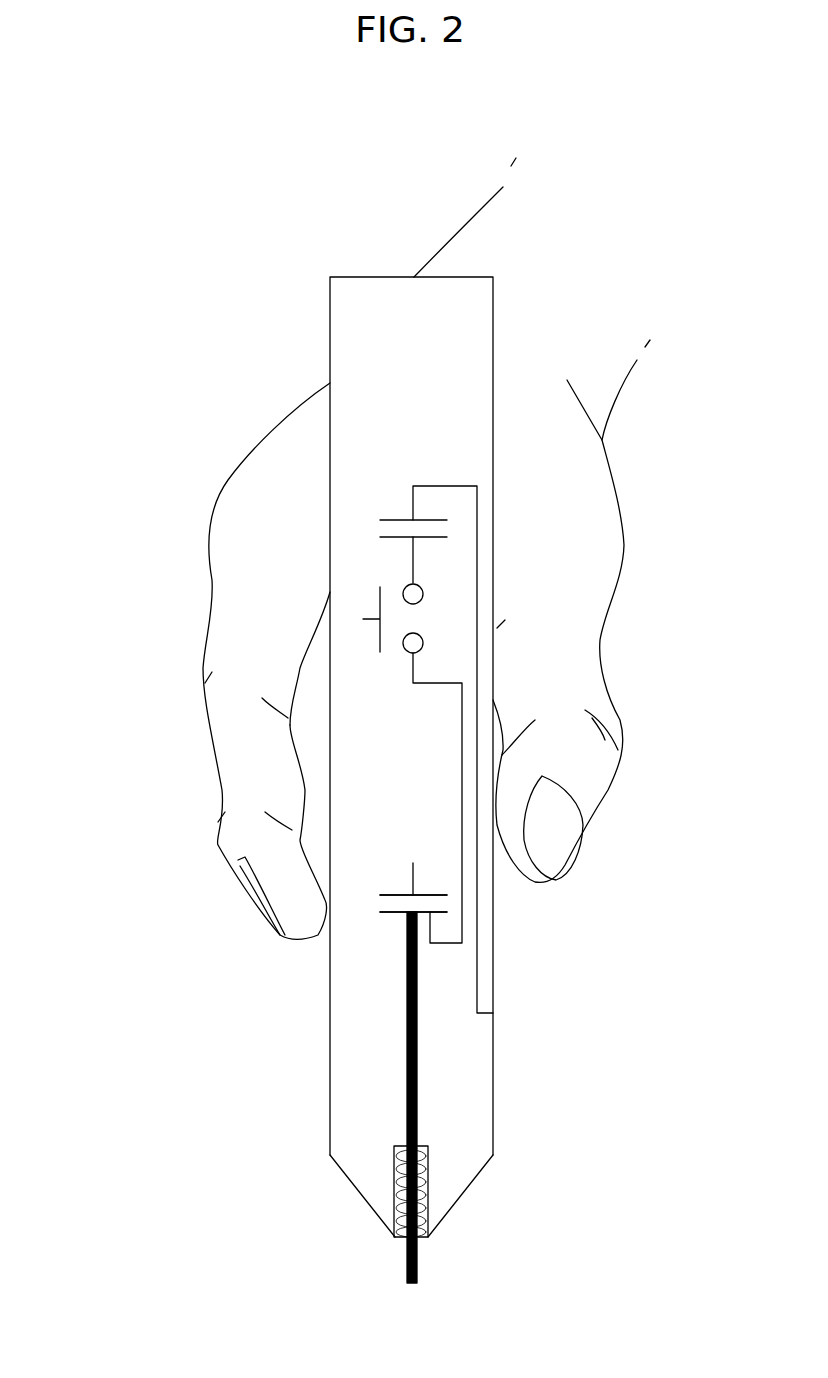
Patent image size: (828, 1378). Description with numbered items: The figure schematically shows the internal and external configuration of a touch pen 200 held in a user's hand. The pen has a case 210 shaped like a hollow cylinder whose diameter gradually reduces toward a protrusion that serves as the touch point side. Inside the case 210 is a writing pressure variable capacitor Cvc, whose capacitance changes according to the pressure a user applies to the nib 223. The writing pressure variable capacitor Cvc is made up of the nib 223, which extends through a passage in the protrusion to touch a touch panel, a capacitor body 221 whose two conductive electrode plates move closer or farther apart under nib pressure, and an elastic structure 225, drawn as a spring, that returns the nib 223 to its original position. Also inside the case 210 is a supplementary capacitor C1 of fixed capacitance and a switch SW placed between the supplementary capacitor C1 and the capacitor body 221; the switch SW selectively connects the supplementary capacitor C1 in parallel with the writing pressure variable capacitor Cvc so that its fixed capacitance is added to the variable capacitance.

The touch pen 200 is at (703, 210).
The case 210 is at (493, 1082).
The supplementary capacitor C1 is at (400, 518).
The switch SW is at (373, 617).
The writing pressure variable capacitor Cvc is at (149, 990).
The capacitor body 221 is at (391, 915).
The nib 223 is at (408, 1037).
The elastic structure 225 is at (394, 1165).